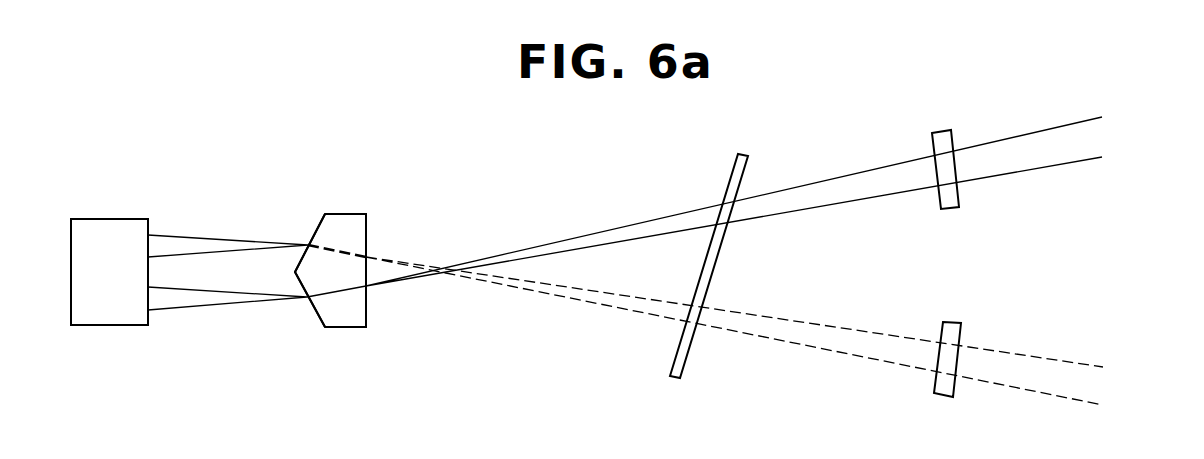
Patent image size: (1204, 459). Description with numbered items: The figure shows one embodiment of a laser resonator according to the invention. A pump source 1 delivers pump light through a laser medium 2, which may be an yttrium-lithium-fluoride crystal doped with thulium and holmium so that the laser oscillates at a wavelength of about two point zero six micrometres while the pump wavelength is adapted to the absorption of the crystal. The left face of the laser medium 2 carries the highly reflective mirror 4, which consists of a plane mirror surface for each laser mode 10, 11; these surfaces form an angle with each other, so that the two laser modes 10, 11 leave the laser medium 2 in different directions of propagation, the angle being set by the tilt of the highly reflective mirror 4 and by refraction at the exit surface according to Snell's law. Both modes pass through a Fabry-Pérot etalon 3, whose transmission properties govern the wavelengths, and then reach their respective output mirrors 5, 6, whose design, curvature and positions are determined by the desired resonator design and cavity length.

The pump source 1 is at (110, 219).
The laser medium 2 is at (343, 222).
The Fabry-Pérot etalon 3 is at (733, 172).
The highly reflective mirror 4 is at (318, 228).
The output mirror 5 is at (955, 197).
The output mirror 6 is at (950, 383).
The laser mode 10 is at (613, 232).
The laser mode 11 is at (615, 307).